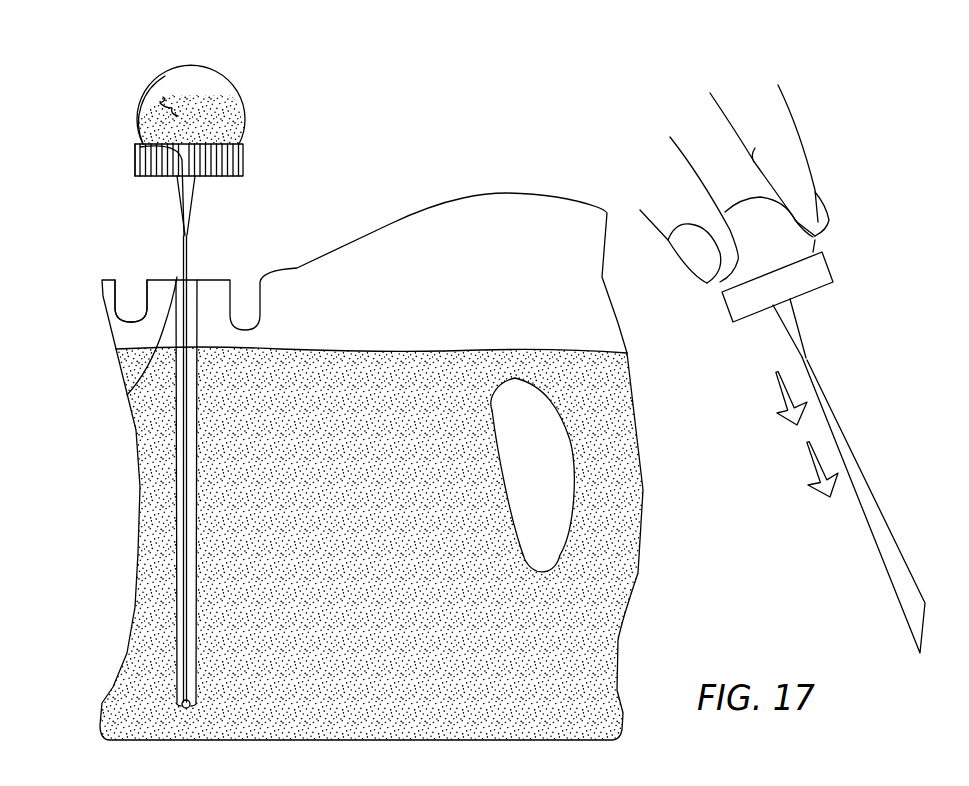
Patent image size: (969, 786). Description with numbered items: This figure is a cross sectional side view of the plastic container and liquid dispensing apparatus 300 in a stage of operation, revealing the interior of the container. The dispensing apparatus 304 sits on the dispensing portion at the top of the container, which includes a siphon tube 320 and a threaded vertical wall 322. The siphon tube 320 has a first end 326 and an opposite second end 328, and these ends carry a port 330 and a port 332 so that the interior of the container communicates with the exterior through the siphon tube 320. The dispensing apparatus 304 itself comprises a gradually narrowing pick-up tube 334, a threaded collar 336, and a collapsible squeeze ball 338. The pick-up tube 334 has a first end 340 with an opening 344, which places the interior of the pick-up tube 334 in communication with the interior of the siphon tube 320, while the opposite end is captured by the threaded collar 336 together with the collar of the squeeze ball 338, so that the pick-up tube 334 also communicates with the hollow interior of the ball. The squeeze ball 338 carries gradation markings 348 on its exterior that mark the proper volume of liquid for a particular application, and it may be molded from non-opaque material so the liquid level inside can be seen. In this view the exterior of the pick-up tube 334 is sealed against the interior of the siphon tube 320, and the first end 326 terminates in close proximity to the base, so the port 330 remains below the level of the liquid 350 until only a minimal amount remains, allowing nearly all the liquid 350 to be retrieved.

The dispensing apparatus 300 is at (503, 115).
The dispensing apparatus 304 is at (193, 67).
The siphon tube 320 is at (177, 427).
The threaded vertical wall 322 is at (150, 290).
The first end 326 is at (188, 704).
The second end 328 is at (190, 282).
The port 330 is at (184, 708).
The port 332 is at (193, 274).
The pick-up tube 334 is at (197, 182).
The threaded collar 336 is at (138, 140).
The collapsible squeeze ball 338 is at (160, 77).
The first end 340 is at (150, 177).
The opening 344 is at (135, 149).
The gradation markings 348 is at (178, 117).
The liquid 350 is at (482, 350).